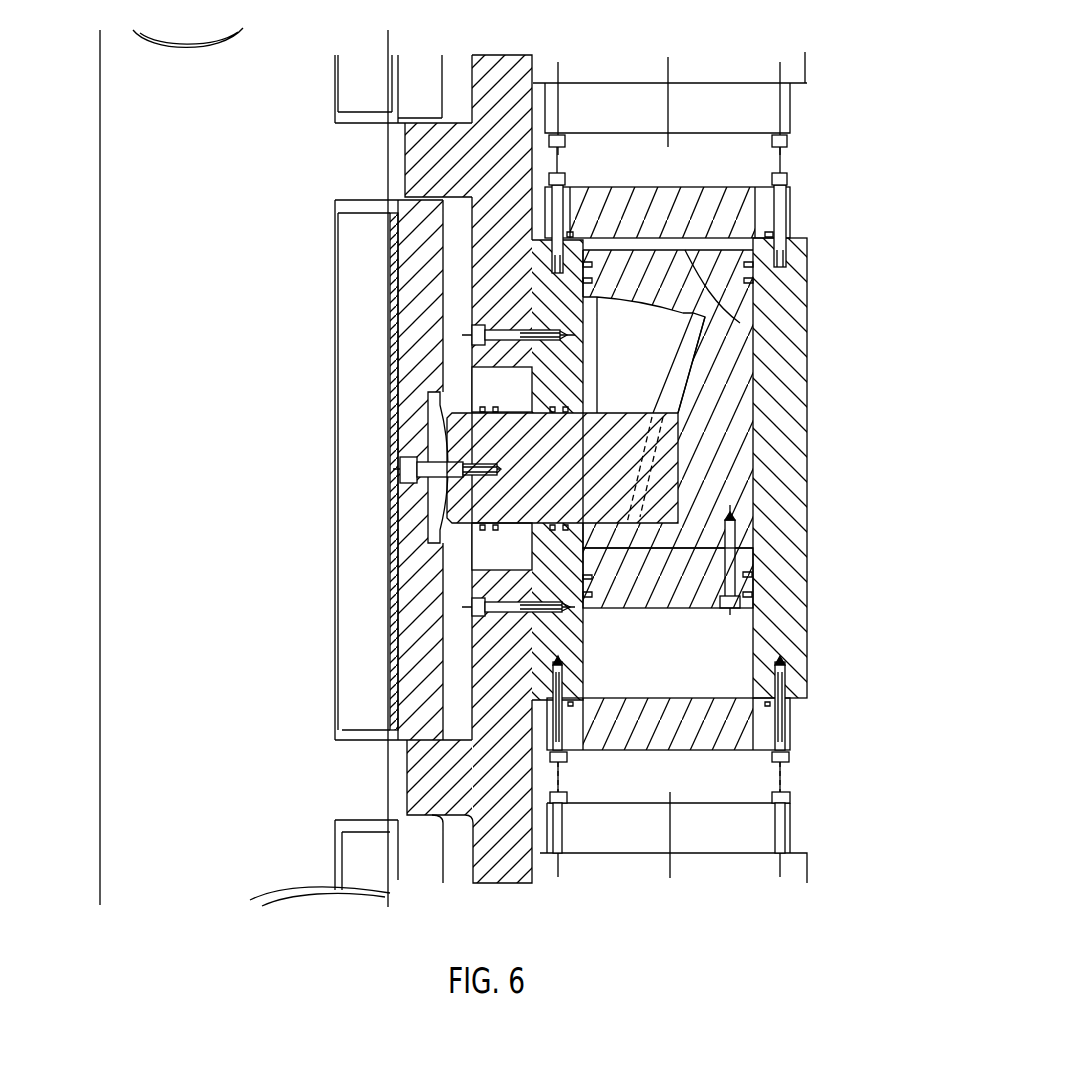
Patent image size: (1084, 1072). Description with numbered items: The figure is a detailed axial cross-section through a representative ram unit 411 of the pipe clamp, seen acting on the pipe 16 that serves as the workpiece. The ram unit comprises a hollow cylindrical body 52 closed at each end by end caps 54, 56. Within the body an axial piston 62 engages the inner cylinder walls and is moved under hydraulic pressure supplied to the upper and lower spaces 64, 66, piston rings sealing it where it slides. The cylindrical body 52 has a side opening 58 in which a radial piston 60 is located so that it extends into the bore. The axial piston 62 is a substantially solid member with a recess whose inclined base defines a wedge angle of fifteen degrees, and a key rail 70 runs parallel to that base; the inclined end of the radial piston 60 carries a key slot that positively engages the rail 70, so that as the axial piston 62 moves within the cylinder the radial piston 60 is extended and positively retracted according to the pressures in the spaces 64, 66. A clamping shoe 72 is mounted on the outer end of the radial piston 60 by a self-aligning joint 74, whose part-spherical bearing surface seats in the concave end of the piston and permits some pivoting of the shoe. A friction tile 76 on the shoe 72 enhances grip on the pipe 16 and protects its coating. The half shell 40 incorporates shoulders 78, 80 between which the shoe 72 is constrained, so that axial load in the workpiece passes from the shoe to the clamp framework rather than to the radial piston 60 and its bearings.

The pipe 16 is at (388, 30).
The half shell 40 is at (500, 55).
The hollow cylindrical body 52 is at (806, 390).
The end cap 54 is at (750, 187).
The end cap 56 is at (747, 740).
The side opening 58 is at (532, 523).
The radial piston 60 is at (630, 412).
The axial piston 62 is at (735, 472).
The upper space 64 is at (740, 325).
The lower space 66 is at (705, 632).
The key rail 70 is at (675, 320).
The clamping shoe 72 is at (413, 232).
The self-aligning joint 74 is at (432, 434).
The friction tile 76 is at (392, 278).
The shoulder 78 is at (390, 782).
The shoulder 80 is at (403, 158).
The ram unit 411 is at (586, 467).